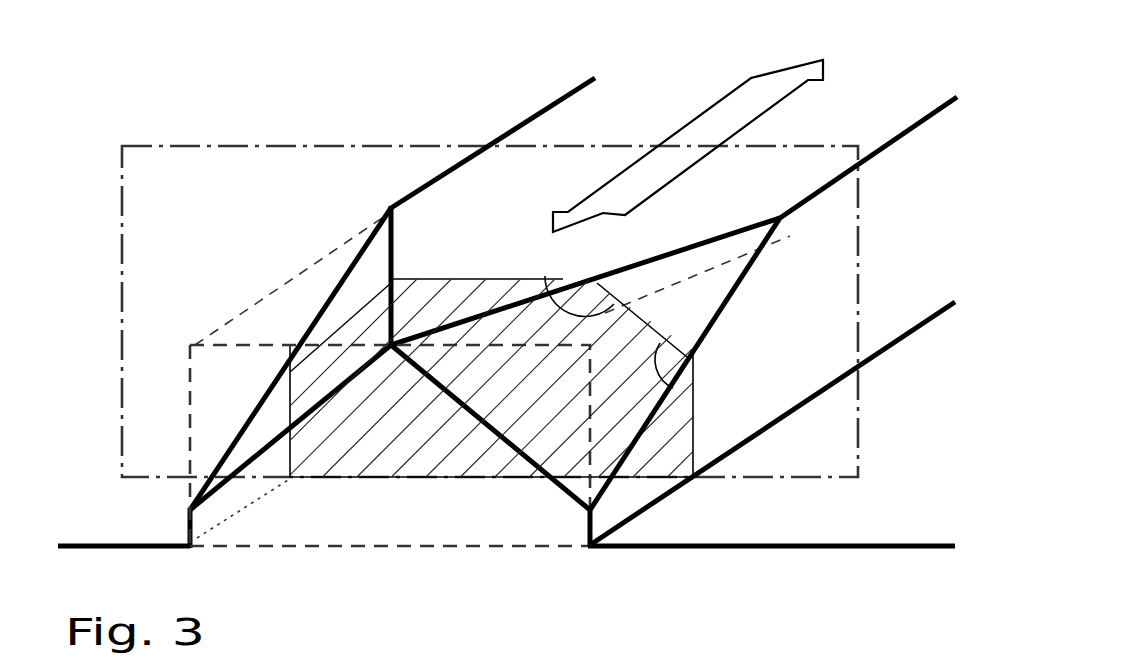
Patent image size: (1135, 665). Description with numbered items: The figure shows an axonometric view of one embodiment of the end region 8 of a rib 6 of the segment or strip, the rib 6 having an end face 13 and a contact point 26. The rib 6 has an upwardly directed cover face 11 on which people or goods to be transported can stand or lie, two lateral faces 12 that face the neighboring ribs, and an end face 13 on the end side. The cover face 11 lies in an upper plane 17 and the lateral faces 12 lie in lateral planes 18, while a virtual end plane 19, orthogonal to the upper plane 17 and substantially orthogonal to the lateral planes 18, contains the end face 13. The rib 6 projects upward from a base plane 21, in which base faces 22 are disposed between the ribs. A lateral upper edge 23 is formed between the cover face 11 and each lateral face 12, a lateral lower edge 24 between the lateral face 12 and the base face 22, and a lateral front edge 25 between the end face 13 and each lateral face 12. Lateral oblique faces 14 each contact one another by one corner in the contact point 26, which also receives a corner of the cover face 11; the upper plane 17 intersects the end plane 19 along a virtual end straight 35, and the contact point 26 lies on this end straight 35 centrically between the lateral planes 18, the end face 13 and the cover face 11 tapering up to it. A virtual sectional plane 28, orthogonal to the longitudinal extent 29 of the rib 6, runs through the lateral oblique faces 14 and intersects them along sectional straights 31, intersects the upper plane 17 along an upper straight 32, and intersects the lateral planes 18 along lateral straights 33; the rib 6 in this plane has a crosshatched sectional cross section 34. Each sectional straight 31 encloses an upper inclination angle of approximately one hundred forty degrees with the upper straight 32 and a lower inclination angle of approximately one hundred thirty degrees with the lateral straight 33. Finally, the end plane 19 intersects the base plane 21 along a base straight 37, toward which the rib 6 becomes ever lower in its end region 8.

The rib 6 is at (608, 122).
The end region 8 is at (124, 114).
The cover face 11 is at (562, 183).
The lateral faces 12 is at (892, 290).
The end face 13 is at (420, 515).
The lateral oblique faces 14 is at (647, 300).
The upper plane 17 is at (320, 287).
The lateral planes 18 is at (755, 346).
The end plane 19 is at (215, 430).
The base plane 21 is at (730, 512).
The base faces 22 is at (686, 520).
The lateral upper edge 23 is at (877, 155).
The lateral lower edge 24 is at (812, 400).
The lateral front edge 25 is at (188, 524).
The contact point 26 is at (388, 352).
The virtual sectional plane 28 is at (197, 205).
The longitudinal extent 29 is at (713, 128).
The sectional straight 31 is at (377, 287).
The upper straight 32 is at (490, 278).
The lateral straight 33 is at (290, 407).
The sectional cross section 34 is at (513, 407).
The virtual end straight 35 is at (263, 346).
The base straight 37 is at (283, 548).